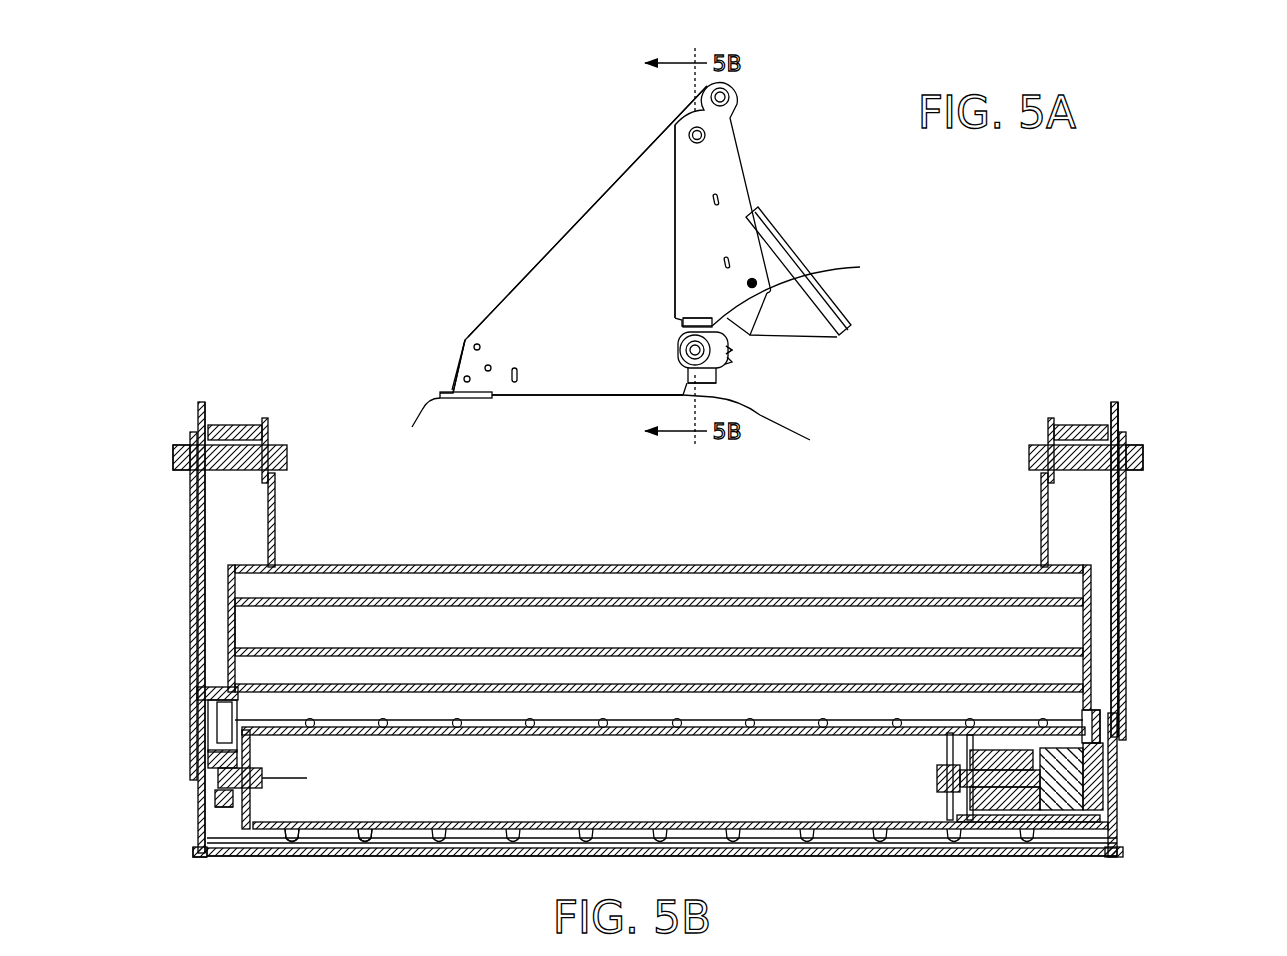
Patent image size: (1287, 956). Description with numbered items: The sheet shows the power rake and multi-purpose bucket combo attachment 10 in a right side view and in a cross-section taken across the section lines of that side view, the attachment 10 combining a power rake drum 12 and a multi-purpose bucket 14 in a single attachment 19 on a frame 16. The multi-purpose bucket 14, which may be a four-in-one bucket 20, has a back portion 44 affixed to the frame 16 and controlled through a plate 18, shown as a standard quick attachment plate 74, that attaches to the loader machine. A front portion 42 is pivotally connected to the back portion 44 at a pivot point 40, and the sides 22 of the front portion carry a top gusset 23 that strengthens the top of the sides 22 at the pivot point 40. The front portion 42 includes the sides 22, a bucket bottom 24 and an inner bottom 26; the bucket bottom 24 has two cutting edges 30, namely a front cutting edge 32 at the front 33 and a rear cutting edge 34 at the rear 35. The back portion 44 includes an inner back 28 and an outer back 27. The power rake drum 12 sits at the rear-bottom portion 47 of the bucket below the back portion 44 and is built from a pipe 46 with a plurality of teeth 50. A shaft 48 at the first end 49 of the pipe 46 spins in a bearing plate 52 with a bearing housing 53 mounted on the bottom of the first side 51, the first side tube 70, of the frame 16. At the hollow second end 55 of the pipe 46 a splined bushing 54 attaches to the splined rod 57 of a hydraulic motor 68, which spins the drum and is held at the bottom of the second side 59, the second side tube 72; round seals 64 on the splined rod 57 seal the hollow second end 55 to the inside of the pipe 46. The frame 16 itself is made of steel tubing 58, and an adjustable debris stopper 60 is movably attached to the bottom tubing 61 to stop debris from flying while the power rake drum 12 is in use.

In FIG. 5A, the power rake and multi-purpose bucket combo attachment 10 is at (755, 58).
In FIG. 5B, the power rake and multi-purpose bucket combo attachment 10 is at (1148, 406).
In FIG. 5A, the power rake drum 12 is at (727, 367).
In FIG. 5B, the power rake drum 12 is at (773, 838).
In FIG. 5A, the multi-purpose bucket 14 is at (417, 343).
In FIG. 5B, the multi-purpose bucket 14 is at (138, 758).
In FIG. 5B, the frame 16 is at (210, 618).
In FIG. 5A, the plate 18 is at (819, 269).
In FIG. 5A, the single attachment 19 is at (508, 165).
In FIG. 5A, the 4-N-1 bucket 20 is at (440, 347).
In FIG. 5B, the 4-N-1 bucket 20 is at (137, 710).
In FIG. 5A, the sides 22 is at (579, 292).
In FIG. 5B, the sides 22 is at (205, 760).
In FIG. 5B, the top gusset 23 is at (208, 533).
In FIG. 5A, the bucket bottom 24 is at (563, 397).
In FIG. 5B, the bucket bottom 24 is at (450, 850).
In FIG. 5B, the inner bottom 26 is at (535, 840).
In FIG. 5A, the outer back 27 is at (699, 245).
In FIG. 5B, the outer back 27 is at (190, 530).
In FIG. 5B, the inner back 28 is at (277, 520).
In FIG. 5A, the cutting edges 30 is at (389, 420).
In FIG. 5A, the front cutting edge 32 is at (778, 424).
In FIG. 5A, the front 33 is at (435, 393).
In FIG. 5A, the rear cutting edge 34 is at (389, 420).
In FIG. 5A, the rear 35 is at (667, 405).
In FIG. 5A, the pivot point 40 is at (688, 134).
In FIG. 5B, the pivot point 40 is at (180, 452).
In FIG. 5A, the front portion 42 is at (518, 254).
In FIG. 5A, the back portion 44 is at (750, 157).
In FIG. 5A, the pipe 46 is at (730, 340).
In FIG. 5B, the pipe 46 is at (323, 838).
In FIG. 5A, the rear-bottom portion 47 is at (663, 360).
In FIG. 5B, the shaft 48 is at (228, 808).
In FIG. 5B, the first end 49 is at (253, 860).
In FIG. 5A, the teeth 50 is at (733, 355).
In FIG. 5B, the teeth 50 is at (367, 852).
In FIG. 5B, the first side 51 is at (222, 723).
In FIG. 5A, the bearing plate 52 is at (801, 290).
In FIG. 5B, the bearing plate 52 is at (208, 777).
In FIG. 5B, the bearing housing 53 is at (232, 802).
In FIG. 5B, the splined bushing 54 is at (1018, 752).
In FIG. 5B, the hollow second end 55 is at (1052, 845).
In FIG. 5B, the splined rod 57 is at (968, 785).
In FIG. 5B, the steel tubing 58 is at (472, 583).
In FIG. 5B, the second side 59 is at (1107, 693).
In FIG. 5B, the adjustable debris stopper 60 is at (355, 707).
In FIG. 5B, the bottom tubing 61 is at (688, 665).
In FIG. 5B, the round seals 64 is at (978, 817).
In FIG. 5B, the hydraulic motor 68 is at (1097, 788).
In FIG. 5B, the first side tube 70 is at (208, 630).
In FIG. 5B, the second side tube 72 is at (1108, 672).
In FIG. 5A, the standard quick attachment plate 74 is at (825, 240).